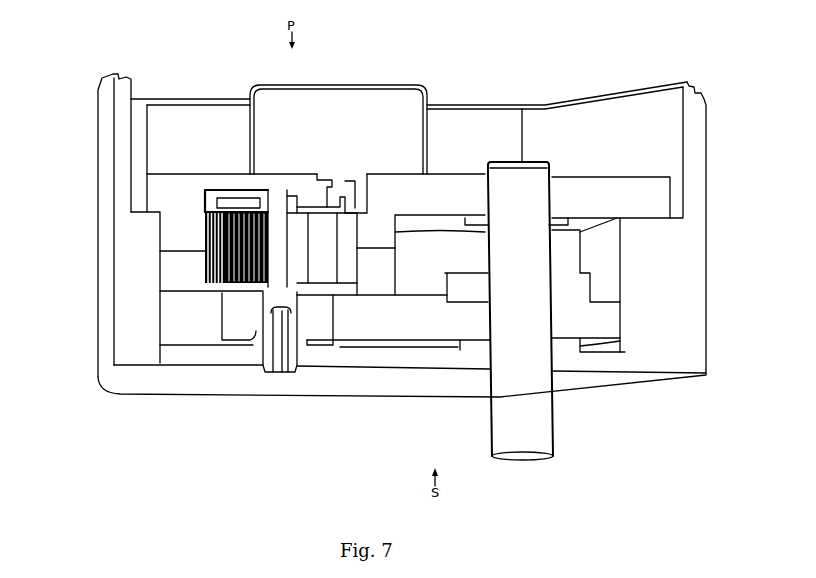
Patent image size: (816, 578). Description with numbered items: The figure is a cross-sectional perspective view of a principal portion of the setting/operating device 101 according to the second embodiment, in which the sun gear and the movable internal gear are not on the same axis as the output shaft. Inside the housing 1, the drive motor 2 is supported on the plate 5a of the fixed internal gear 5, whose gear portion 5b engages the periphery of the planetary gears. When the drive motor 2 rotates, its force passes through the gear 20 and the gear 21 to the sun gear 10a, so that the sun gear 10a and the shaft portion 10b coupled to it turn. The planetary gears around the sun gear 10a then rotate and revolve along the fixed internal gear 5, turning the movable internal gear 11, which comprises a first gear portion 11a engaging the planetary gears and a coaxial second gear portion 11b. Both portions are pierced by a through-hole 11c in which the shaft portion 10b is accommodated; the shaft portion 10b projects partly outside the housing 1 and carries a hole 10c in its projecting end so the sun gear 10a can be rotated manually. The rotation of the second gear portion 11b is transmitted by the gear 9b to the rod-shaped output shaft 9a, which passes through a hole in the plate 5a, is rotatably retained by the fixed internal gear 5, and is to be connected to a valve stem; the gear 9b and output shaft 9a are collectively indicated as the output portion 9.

The setting/operating device 101 is at (711, 64).
The housing 1 is at (97, 119).
The drive motor 2 is at (331, 98).
The fixed internal gear 5 is at (44, 178).
The plate 5a is at (147, 187).
The gear portion 5b is at (160, 216).
The gear 21 is at (227, 199).
The gear 20 is at (357, 182).
The sun gear 10a is at (283, 249).
The shaft portion 10b is at (265, 373).
The hole 10c is at (282, 373).
The movable internal gear 11 is at (44, 265).
The first gear portion 11a is at (170, 273).
The second gear portion 11b is at (222, 319).
The through-hole 11c is at (200, 341).
The discharge portion 9 is at (742, 233).
The output shaft 9a is at (552, 239).
The gear 9b is at (608, 312).